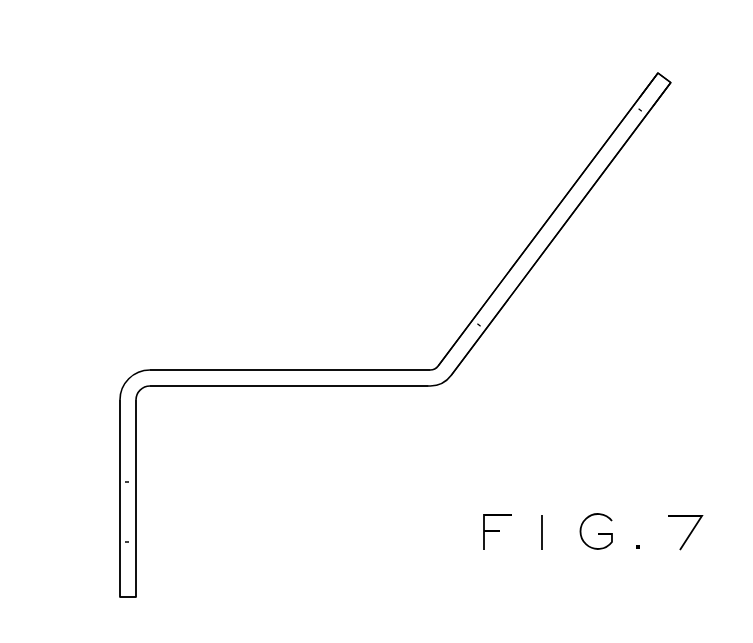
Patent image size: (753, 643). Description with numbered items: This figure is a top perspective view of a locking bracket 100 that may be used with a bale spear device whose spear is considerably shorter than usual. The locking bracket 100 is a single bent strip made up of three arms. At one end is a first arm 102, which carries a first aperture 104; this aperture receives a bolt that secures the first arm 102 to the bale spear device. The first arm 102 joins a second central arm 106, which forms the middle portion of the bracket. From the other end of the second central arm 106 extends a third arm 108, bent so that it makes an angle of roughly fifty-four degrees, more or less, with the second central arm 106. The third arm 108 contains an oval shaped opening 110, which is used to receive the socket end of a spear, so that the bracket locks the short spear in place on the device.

The locking bracket 100 is at (337, 232).
The first arm 102 is at (120, 572).
The first aperture 104 is at (137, 512).
The second central arm 106 is at (259, 370).
The third arm 108 is at (643, 90).
The oval shaped opening 110 is at (559, 202).